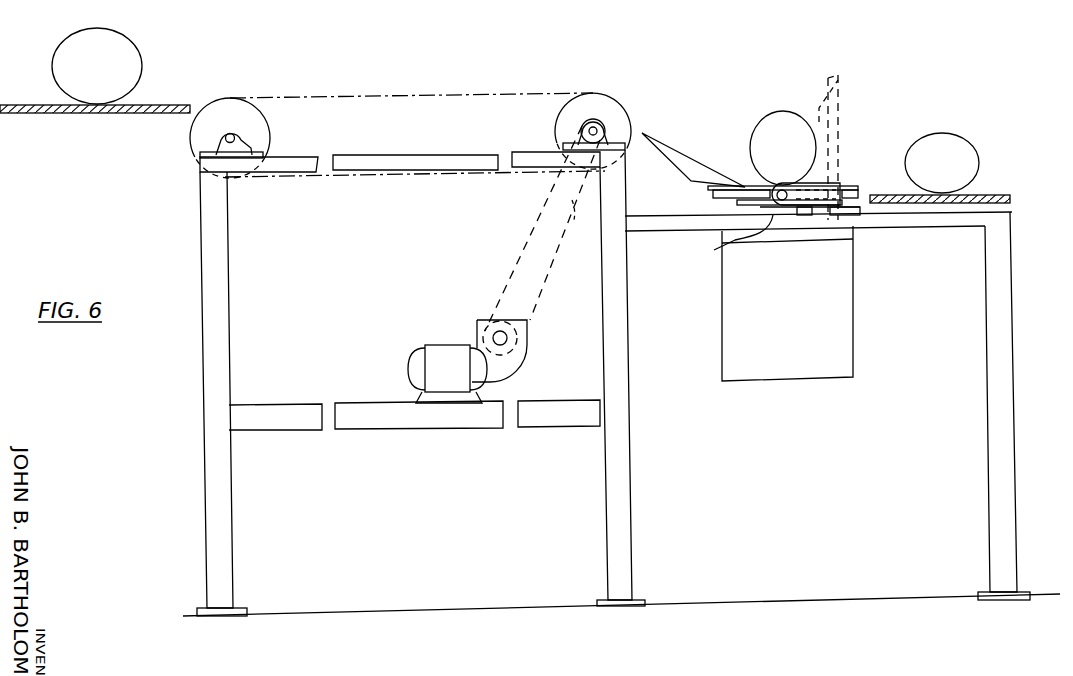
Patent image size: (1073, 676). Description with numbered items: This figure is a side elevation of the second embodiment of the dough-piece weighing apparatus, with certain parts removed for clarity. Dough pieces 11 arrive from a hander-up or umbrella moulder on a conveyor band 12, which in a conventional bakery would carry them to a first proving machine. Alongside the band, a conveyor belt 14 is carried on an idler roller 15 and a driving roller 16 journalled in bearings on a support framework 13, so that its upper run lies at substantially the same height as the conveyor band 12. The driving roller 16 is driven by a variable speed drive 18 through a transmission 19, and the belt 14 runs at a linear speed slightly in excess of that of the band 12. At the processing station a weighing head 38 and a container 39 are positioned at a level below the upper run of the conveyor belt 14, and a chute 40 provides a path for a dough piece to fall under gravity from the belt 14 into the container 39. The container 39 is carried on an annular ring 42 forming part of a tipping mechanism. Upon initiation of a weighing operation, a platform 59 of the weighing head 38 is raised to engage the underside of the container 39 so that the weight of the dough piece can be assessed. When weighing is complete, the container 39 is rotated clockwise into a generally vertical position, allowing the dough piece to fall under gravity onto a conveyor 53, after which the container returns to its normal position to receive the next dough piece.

The dough pieces 11 is at (133, 62).
The conveyor band 12 is at (104, 114).
The support framework 13 is at (218, 307).
The conveyor belt 14 is at (418, 97).
The idler roller 15 is at (253, 125).
The driving roller 16 is at (562, 124).
The variable speed drive 18 is at (514, 373).
The transmission 19 is at (542, 228).
The weighing head 38 is at (840, 309).
The container 39 is at (840, 119).
The chute 40 is at (669, 146).
The annular ring 42 is at (706, 189).
The conveyor 53 is at (992, 193).
The platform 59 is at (730, 240).